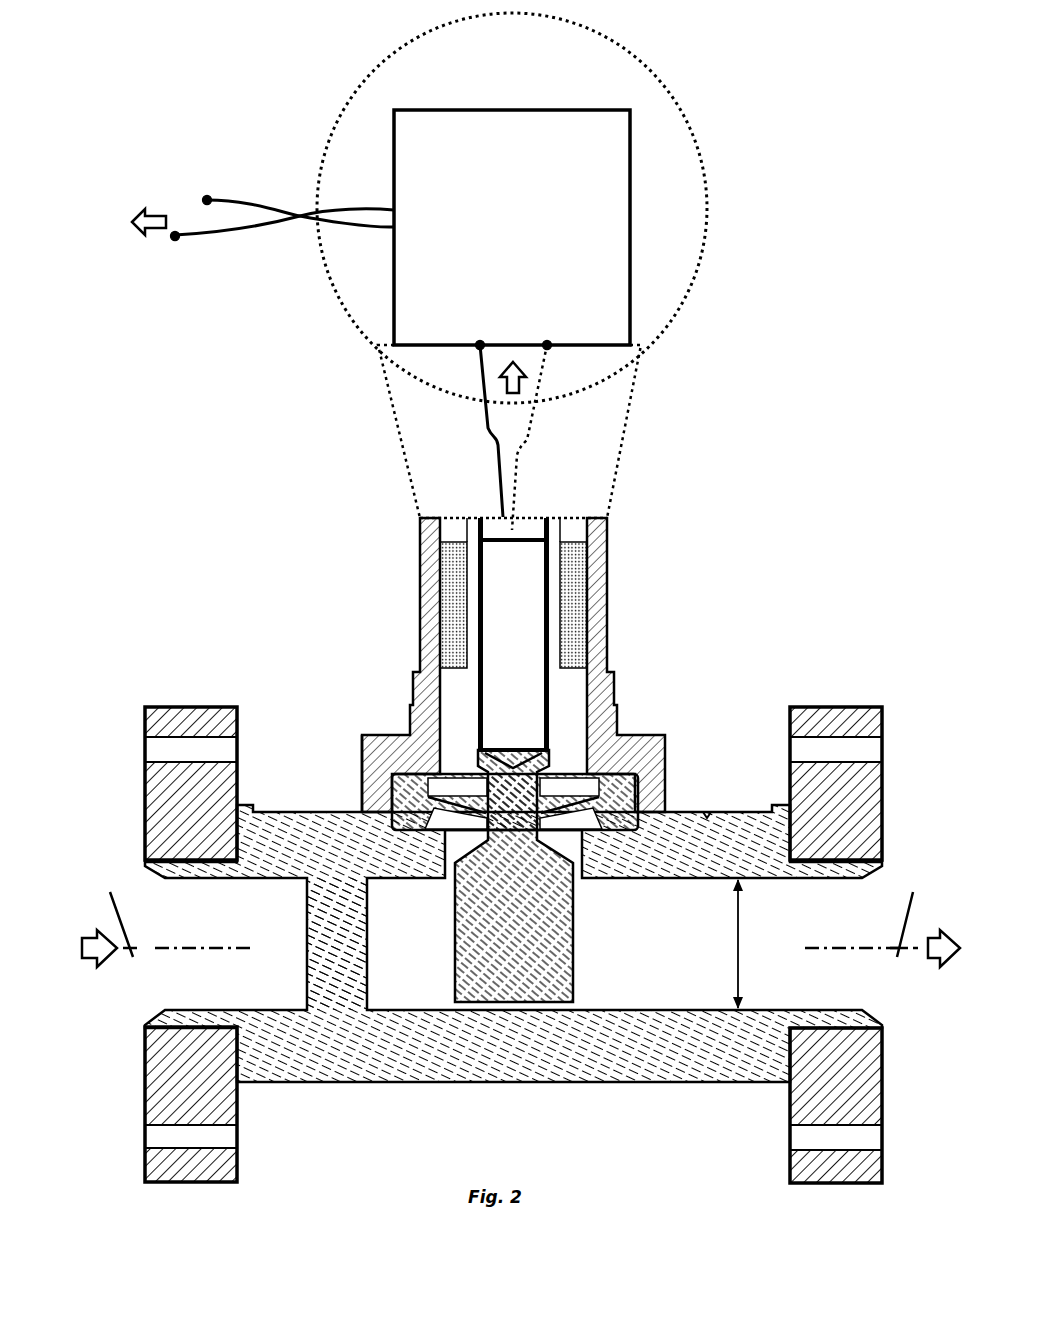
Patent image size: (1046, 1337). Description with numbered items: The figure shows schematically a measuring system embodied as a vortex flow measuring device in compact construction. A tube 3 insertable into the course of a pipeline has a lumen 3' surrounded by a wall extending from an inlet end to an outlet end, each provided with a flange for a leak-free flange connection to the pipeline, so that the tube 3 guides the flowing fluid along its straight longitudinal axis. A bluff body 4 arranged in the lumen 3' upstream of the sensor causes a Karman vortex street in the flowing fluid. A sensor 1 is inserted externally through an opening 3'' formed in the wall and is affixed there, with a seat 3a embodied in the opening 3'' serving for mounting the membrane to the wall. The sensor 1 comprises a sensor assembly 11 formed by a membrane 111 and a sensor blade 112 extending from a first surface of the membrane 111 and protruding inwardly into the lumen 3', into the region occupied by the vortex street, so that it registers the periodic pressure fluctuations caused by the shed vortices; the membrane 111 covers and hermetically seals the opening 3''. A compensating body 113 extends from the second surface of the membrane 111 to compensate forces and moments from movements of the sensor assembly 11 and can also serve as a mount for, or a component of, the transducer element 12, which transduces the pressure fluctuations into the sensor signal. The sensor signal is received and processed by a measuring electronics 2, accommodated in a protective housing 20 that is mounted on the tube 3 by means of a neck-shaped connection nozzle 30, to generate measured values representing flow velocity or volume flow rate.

The sensor 1 is at (502, 598).
The measuring electronics 2 is at (381, 251).
The protective housing 20 is at (686, 264).
The connection nozzle 30 is at (631, 517).
The transducer element 12 is at (528, 527).
The sensor assembly 11 is at (521, 854).
The membrane 111 is at (472, 810).
The sensor blade 112 is at (562, 967).
The compensating body 113 is at (540, 762).
The tube 3 is at (531, 915).
The seat 3a is at (380, 804).
The lumen 3' is at (536, 937).
The opening 3'' is at (502, 893).
The bluff body 4 is at (337, 944).